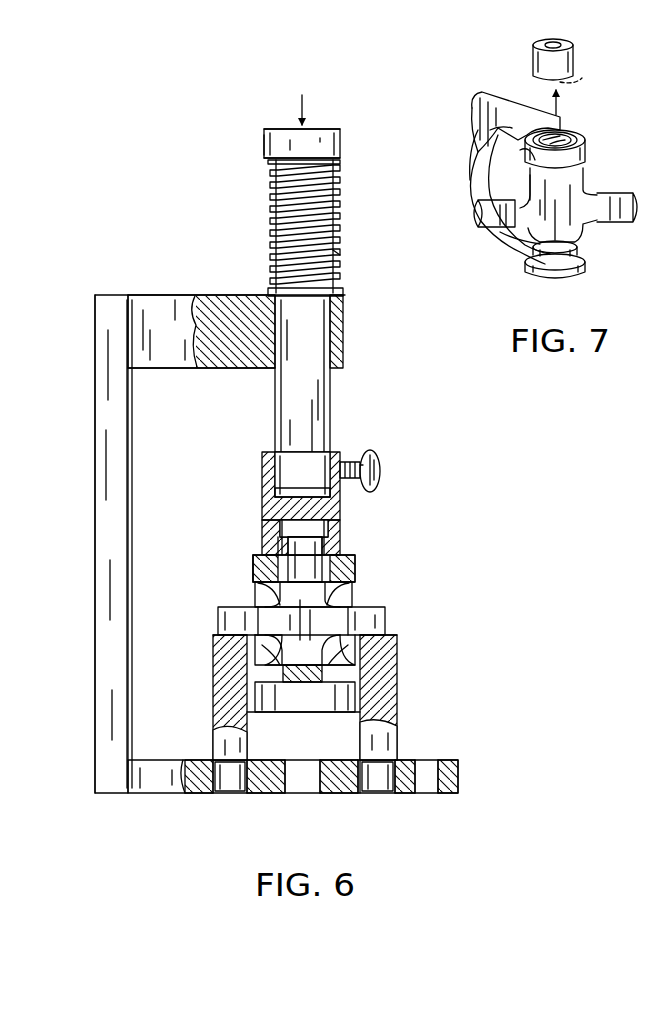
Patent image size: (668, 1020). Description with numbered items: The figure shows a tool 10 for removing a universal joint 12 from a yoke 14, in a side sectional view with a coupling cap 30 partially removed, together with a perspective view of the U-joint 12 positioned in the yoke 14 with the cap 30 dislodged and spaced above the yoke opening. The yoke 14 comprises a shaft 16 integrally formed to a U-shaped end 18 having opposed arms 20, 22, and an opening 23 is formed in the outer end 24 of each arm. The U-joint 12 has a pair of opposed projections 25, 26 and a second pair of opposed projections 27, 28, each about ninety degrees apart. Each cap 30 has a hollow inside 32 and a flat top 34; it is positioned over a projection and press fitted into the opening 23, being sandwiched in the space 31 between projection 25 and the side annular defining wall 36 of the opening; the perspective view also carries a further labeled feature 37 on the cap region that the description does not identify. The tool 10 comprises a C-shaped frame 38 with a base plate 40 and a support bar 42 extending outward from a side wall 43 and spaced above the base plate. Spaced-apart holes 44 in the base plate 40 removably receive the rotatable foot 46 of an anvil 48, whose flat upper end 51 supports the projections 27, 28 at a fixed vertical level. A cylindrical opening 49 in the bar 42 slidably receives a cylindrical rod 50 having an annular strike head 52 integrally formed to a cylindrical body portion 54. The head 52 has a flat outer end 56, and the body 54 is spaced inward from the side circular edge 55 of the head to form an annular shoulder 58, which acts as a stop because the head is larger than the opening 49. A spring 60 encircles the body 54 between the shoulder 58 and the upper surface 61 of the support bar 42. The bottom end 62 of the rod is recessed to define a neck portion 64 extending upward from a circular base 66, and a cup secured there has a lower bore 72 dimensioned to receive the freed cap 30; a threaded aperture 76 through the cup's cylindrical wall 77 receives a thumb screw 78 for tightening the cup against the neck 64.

In FIG. 6, the tool 10 is at (200, 165).
In FIG. 6, the universal joint 12 is at (330, 615).
In FIG. 7, the universal joint 12 is at (578, 198).
In FIG. 6, the yoke 14 is at (333, 715).
In FIG. 7, the yoke 14 is at (478, 132).
In FIG. 7, the shaft 16 is at (478, 90).
In FIG. 6, the U-shaped end 18 is at (270, 713).
In FIG. 7, the U-shaped end 18 is at (480, 150).
In FIG. 6, the yoke arm 20 is at (356, 568).
In FIG. 7, the yoke arm 20 is at (565, 130).
In FIG. 6, the yoke arm 22 is at (303, 683).
In FIG. 7, the yoke arm 22 is at (515, 248).
In FIG. 7, the opening 23 is at (567, 137).
In FIG. 6, the outer end 24 is at (322, 565).
In FIG. 7, the outer end 24 is at (530, 175).
In FIG. 6, the projection 25 is at (275, 545).
In FIG. 7, the projection 25 is at (530, 150).
In FIG. 6, the projection 26 is at (356, 668).
In FIG. 7, the projection 26 is at (580, 264).
In FIG. 6, the projection 27 is at (386, 622).
In FIG. 7, the projection 27 is at (625, 223).
In FIG. 6, the projection 28 is at (216, 618).
In FIG. 7, the projection 28 is at (478, 222).
In FIG. 6, the coupling cap 30 is at (322, 545).
In FIG. 7, the coupling cap 30 is at (575, 50).
In FIG. 6, the space 31 is at (352, 595).
In FIG. 7, the hollow inside 32 is at (578, 82).
In FIG. 6, the flat top 34 is at (280, 530).
In FIG. 7, the flat top 34 is at (548, 44).
In FIG. 6, the side annular defining wall 36 is at (252, 565).
In FIG. 7, the bore 37 is at (580, 142).
In FIG. 6, the C-shaped frame 38 is at (140, 292).
In FIG. 6, the base plate 40 is at (148, 778).
In FIG. 6, the support bar 42 is at (172, 369).
In FIG. 6, the side wall 43 is at (93, 505).
In FIG. 6, the holes 44 is at (265, 778).
In FIG. 6, the foot 46 is at (225, 780).
In FIG. 6, the anvil 48 is at (213, 742).
In FIG. 6, the cylindrical opening 49 is at (344, 345).
In FIG. 6, the cylindrical rod 50 is at (312, 385).
In FIG. 6, the flat upper end 51 is at (212, 640).
In FIG. 6, the strike head 52 is at (265, 130).
In FIG. 6, the cylindrical body portion 54 is at (272, 250).
In FIG. 6, the side circular edge 55 is at (268, 144).
In FIG. 6, the flat outer end 56 is at (324, 130).
In FIG. 6, the annular shoulder 58 is at (268, 160).
In FIG. 6, the spring 60 is at (340, 265).
In FIG. 6, the upper surface 61 is at (192, 293).
In FIG. 6, the bottom end 62 is at (312, 470).
In FIG. 6, the neck portion 64 is at (272, 470).
In FIG. 6, the circular base 66 is at (328, 525).
In FIG. 6, the lower bore 72 is at (340, 530).
In FIG. 6, the threaded aperture 76 is at (358, 462).
In FIG. 6, the cylindrical wall 77 is at (381, 480).
In FIG. 6, the thumb screw 78 is at (381, 470).